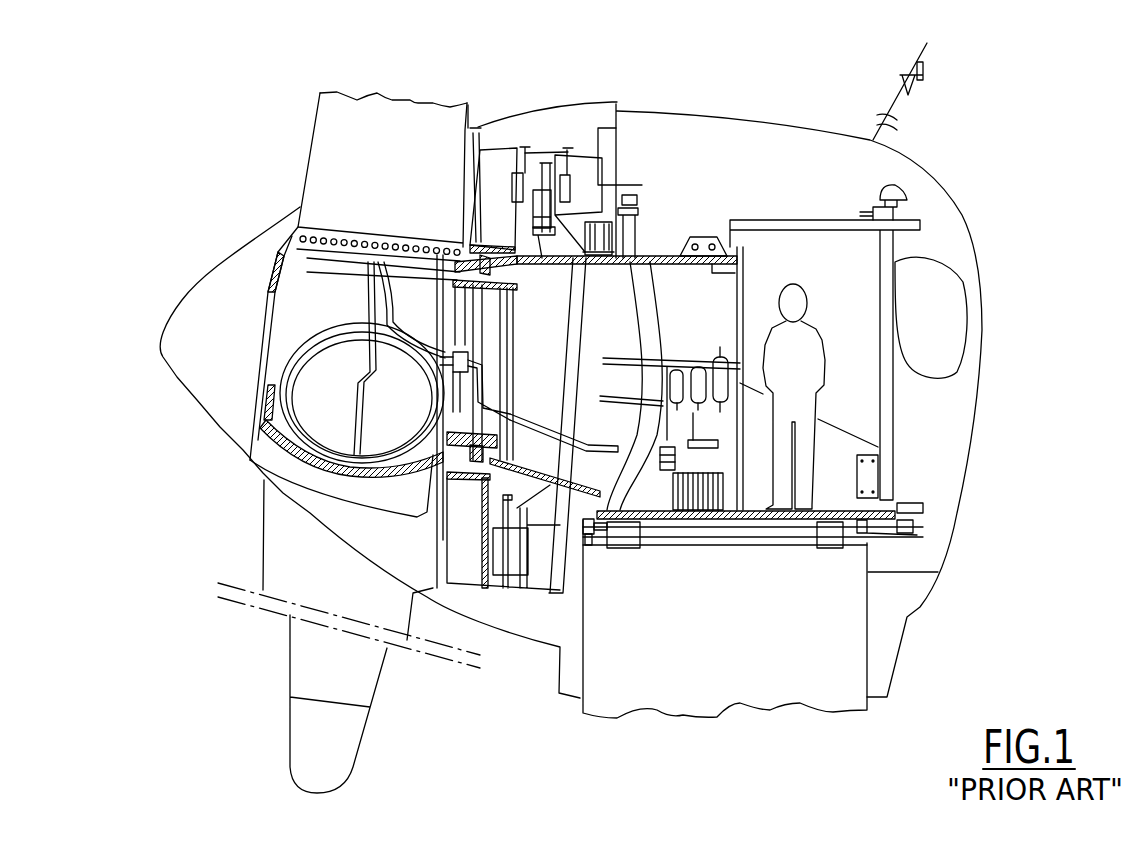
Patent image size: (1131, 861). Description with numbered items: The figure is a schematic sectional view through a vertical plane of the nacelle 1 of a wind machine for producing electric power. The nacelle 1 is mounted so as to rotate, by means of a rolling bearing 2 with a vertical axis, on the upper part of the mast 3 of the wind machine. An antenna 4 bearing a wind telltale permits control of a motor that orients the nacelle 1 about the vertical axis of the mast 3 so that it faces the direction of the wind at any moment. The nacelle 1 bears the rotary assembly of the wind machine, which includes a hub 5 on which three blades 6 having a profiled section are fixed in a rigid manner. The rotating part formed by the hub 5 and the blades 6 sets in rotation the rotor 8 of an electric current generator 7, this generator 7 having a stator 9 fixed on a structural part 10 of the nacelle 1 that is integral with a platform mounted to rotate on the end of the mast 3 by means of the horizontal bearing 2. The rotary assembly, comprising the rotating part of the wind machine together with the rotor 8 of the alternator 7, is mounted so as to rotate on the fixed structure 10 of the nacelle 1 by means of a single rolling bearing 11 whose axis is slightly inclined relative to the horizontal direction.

The nacelle 1 is at (1003, 231).
The rolling bearing 2 is at (587, 528).
The mast 3 is at (832, 683).
The antenna 4 is at (883, 127).
The hub 5 is at (290, 253).
The blades 6 is at (323, 157).
The electric current generator 7 is at (545, 142).
The rotor 8 is at (503, 157).
The stator 9 is at (537, 208).
The structural part 10 is at (595, 447).
The rolling bearing 11 is at (498, 443).